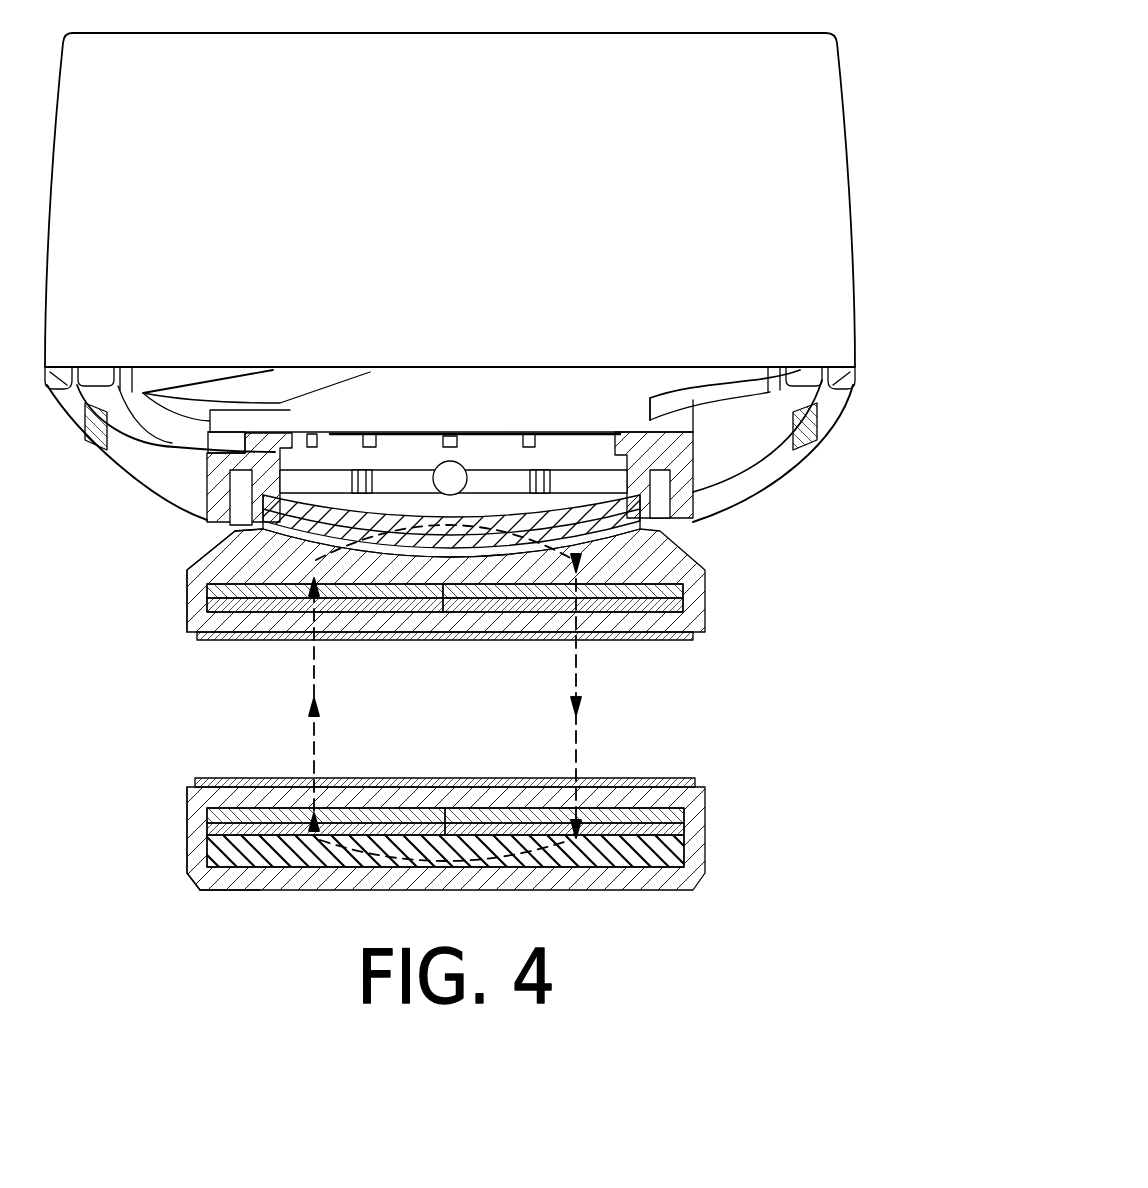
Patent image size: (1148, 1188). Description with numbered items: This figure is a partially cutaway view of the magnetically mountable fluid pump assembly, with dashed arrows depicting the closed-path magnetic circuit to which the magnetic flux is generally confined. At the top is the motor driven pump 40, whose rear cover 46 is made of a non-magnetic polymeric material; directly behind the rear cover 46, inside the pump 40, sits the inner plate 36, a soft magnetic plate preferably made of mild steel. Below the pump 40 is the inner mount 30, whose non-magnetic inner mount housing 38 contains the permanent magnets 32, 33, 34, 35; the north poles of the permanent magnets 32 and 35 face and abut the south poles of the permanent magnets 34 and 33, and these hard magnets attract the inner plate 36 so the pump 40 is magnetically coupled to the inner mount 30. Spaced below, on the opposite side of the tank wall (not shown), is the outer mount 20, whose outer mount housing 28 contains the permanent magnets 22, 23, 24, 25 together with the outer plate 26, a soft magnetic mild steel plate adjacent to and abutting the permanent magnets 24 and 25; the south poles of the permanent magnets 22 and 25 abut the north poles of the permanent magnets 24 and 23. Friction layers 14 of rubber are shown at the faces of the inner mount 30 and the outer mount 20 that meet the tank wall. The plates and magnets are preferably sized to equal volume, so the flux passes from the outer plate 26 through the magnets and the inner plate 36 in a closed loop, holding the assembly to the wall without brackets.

The motor driven pump 40 is at (886, 79).
The inner plate 36 is at (270, 506).
The rear cover 46 is at (660, 494).
The inner mount 30 is at (693, 565).
The inner mount housing 38 is at (212, 552).
The permanent magnet 35 is at (218, 591).
The permanent magnet 34 is at (677, 590).
The permanent magnet 33 is at (215, 605).
The permanent magnet 32 is at (673, 606).
The friction layer 14 is at (657, 638).
The outer mount 20 is at (700, 886).
The outer mount housing 28 is at (190, 887).
The permanent magnet 23 is at (218, 815).
The permanent magnet 22 is at (677, 815).
The permanent magnet 25 is at (215, 830).
The permanent magnet 24 is at (675, 830).
The outer plate 26 is at (220, 848).